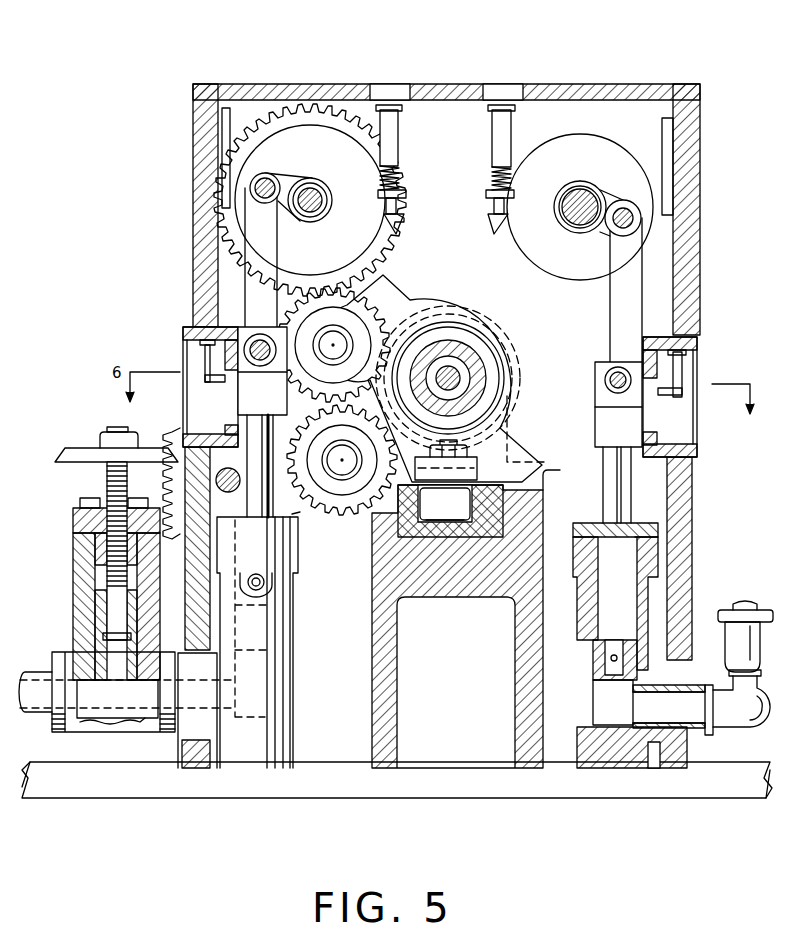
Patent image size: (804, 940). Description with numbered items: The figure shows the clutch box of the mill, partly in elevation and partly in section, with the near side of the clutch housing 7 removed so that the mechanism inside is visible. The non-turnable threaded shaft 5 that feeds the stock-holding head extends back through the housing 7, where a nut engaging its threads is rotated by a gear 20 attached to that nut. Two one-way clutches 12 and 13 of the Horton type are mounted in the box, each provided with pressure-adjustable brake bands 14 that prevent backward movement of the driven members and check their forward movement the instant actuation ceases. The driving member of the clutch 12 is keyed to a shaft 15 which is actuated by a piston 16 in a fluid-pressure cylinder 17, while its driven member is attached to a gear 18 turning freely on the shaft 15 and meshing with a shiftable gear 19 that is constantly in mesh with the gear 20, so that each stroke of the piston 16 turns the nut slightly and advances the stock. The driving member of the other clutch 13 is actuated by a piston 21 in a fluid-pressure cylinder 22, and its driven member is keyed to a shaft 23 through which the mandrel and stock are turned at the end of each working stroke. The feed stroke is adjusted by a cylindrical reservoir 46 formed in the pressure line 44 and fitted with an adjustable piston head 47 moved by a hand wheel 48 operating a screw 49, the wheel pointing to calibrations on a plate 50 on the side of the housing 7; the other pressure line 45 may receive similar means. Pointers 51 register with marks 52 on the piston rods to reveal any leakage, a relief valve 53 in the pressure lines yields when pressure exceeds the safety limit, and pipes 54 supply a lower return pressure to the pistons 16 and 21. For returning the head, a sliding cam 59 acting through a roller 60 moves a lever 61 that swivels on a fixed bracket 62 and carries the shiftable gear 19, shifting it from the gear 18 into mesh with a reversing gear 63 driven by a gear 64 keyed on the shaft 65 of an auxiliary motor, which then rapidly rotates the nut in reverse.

The threaded shaft 5 is at (476, 386).
The clutch housing 7 is at (193, 155).
The one-way clutch 12 is at (310, 200).
The one-way clutch 13 is at (580, 248).
The brake bands 14 is at (402, 190).
The shaft 15 is at (316, 192).
The piston 16 is at (257, 630).
The fluid-pressure cylinder 17 is at (296, 604).
The gear 18 is at (290, 107).
The shiftable gear 19 is at (333, 351).
The gear 20 is at (486, 318).
The piston 21 is at (603, 660).
The fluid-pressure cylinder 22 is at (578, 618).
The shaft 23 is at (580, 207).
The pressure line 44 is at (34, 672).
The pressure line 45 is at (710, 722).
The cylindrical reservoir 46 is at (73, 562).
The adjustable piston head 47 is at (92, 627).
The hand wheel 48 is at (82, 448).
The screw 49 is at (107, 486).
The plate 50 is at (183, 496).
The pointers 51 is at (207, 384).
The marks 52 is at (248, 362).
The relief valve 53 is at (736, 610).
The pipes 54 is at (255, 573).
The sliding cam 59 is at (380, 540).
The roller 60 is at (500, 498).
The lever 61 is at (398, 290).
The fixed bracket 62 is at (457, 322).
The reversing gear 63 is at (342, 503).
The gear 64 is at (294, 510).
The shaft 65 is at (228, 468).